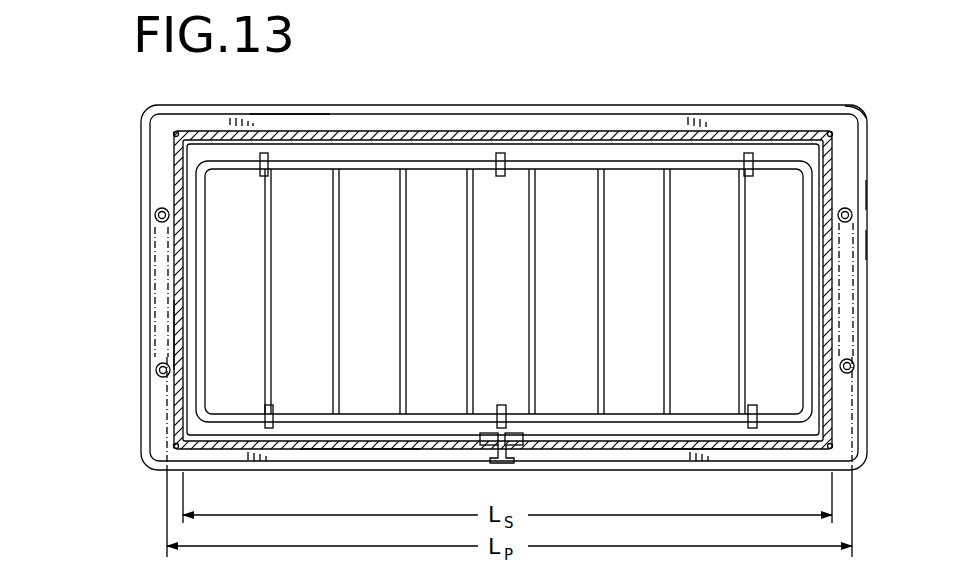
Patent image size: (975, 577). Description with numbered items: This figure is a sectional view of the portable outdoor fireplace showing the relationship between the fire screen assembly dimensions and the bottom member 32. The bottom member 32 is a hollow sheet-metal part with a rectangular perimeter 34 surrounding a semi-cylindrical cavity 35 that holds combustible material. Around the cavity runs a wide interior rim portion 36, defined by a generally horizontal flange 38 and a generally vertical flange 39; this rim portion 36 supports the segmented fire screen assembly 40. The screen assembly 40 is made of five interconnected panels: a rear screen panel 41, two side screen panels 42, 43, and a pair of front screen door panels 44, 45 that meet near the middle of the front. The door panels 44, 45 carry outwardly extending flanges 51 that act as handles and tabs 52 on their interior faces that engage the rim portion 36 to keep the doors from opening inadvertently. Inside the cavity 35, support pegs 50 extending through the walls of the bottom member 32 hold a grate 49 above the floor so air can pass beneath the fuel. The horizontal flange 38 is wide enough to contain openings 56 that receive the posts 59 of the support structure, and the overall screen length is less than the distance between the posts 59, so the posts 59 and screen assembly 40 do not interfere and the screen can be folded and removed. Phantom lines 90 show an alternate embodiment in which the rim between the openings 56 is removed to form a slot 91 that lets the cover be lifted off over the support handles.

The bottom member 32 is at (777, 106).
The rectangular perimeter 34 is at (862, 132).
The semi-cylindrical cavity 35 is at (450, 150).
The rim portion 36 is at (867, 243).
The horizontal flange 38 is at (848, 181).
The vertical flange 39 is at (866, 195).
The fire screen assembly 40 is at (288, 122).
The rear screen panel 41 is at (360, 131).
The side screen panel 42 is at (182, 335).
The side screen panel 43 is at (816, 332).
The screen door panel 44 is at (362, 449).
The screen door panel 45 is at (700, 449).
The grate 49 is at (636, 162).
The support pegs 50 is at (498, 172).
The outwardly extending flanges 51 is at (513, 456).
The tabs 52 is at (512, 436).
The openings 56 is at (157, 225).
The posts 59 is at (157, 212).
The phantom lines 90 is at (856, 346).
The slot 91 is at (855, 286).